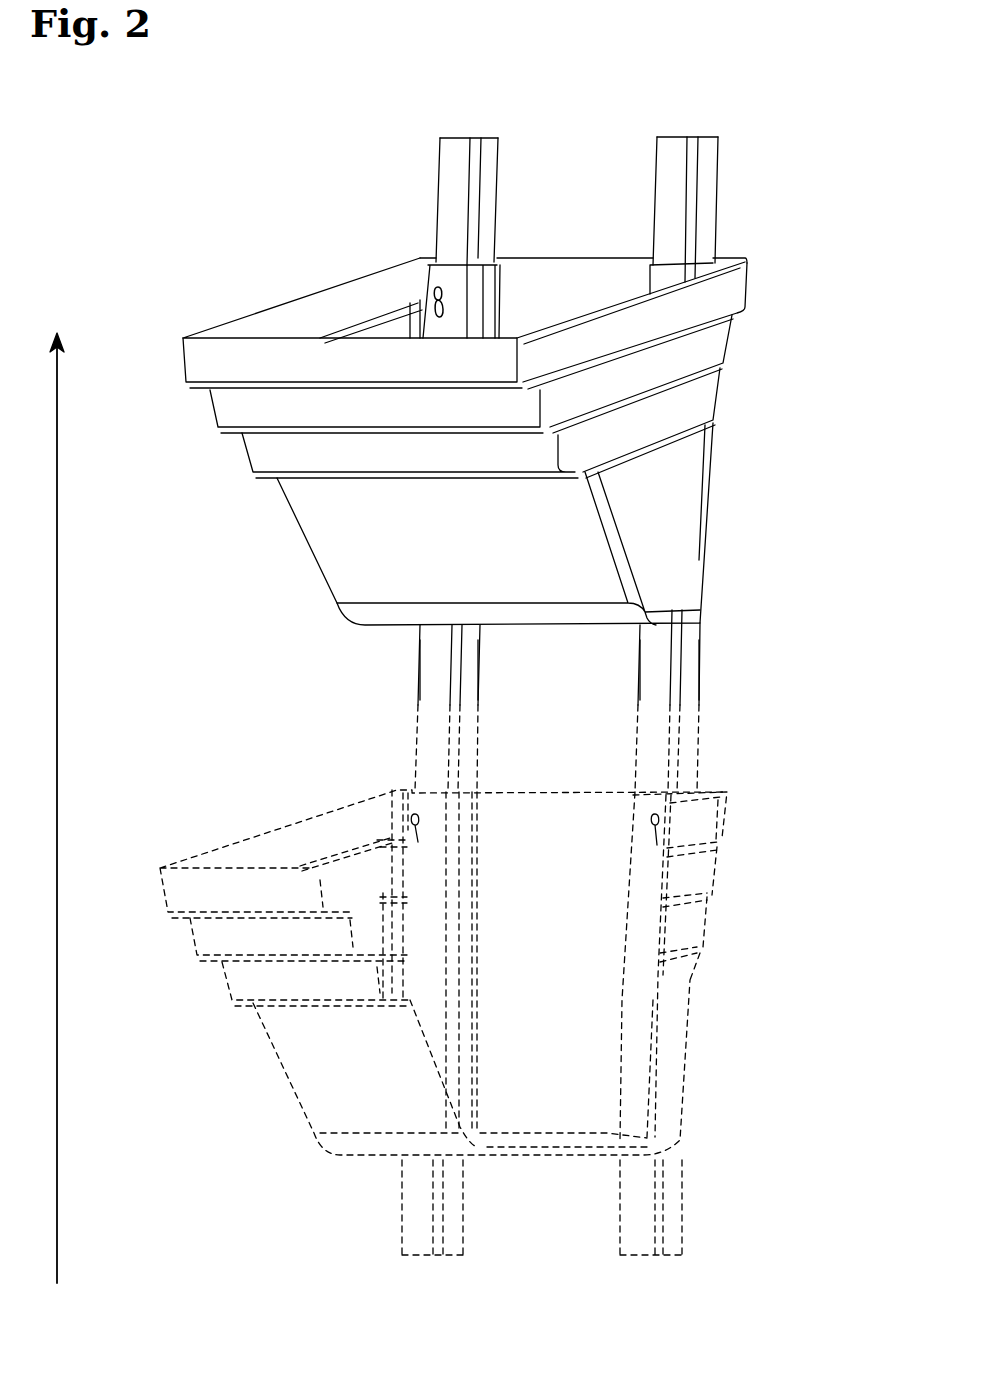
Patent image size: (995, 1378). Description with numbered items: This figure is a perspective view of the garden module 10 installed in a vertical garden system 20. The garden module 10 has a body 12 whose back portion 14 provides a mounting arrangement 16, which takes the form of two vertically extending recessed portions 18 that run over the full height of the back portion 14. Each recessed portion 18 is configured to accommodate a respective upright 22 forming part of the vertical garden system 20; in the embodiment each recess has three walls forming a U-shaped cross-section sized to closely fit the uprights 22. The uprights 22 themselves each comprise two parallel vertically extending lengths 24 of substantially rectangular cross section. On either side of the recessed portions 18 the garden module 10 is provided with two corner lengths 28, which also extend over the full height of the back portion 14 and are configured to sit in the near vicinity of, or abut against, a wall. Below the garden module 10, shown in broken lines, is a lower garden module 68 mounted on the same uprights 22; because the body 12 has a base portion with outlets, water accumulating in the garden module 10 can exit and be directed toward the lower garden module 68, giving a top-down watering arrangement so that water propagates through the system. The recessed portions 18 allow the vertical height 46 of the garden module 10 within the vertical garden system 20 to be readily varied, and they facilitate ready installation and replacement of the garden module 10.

The garden module 10 is at (341, 264).
The body 12 is at (298, 518).
The back portion 14 is at (751, 210).
The mounting arrangement 16 is at (737, 184).
The recessed portion 18 is at (511, 245).
The vertical garden system 20 is at (172, 275).
The upright 22 is at (419, 699).
The vertically extending length 24 is at (420, 704).
The corner length 28 is at (425, 295).
The vertical height 46 is at (57, 1019).
The lower garden module 68 is at (688, 1085).